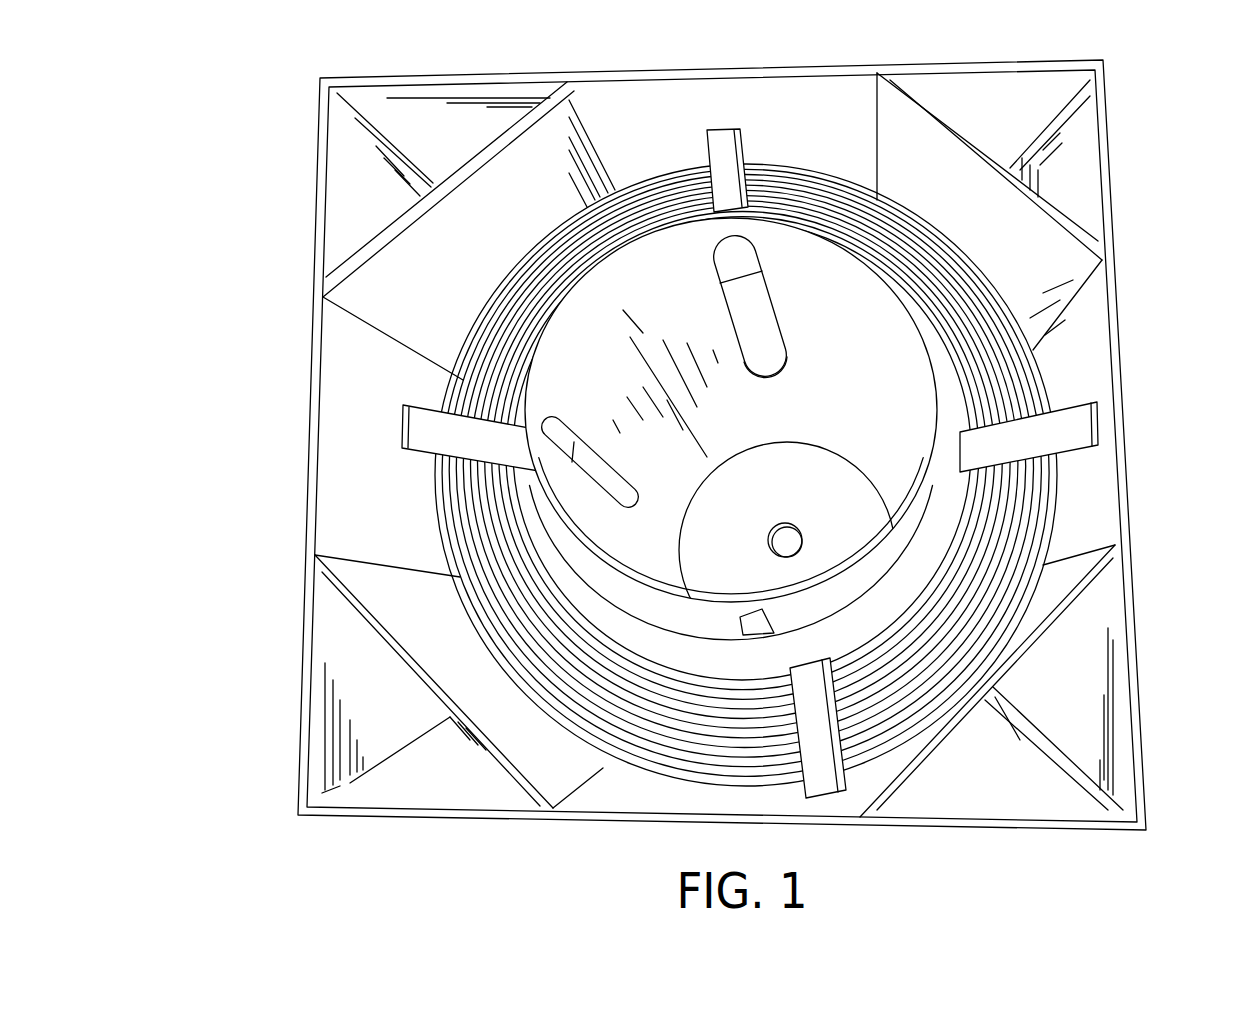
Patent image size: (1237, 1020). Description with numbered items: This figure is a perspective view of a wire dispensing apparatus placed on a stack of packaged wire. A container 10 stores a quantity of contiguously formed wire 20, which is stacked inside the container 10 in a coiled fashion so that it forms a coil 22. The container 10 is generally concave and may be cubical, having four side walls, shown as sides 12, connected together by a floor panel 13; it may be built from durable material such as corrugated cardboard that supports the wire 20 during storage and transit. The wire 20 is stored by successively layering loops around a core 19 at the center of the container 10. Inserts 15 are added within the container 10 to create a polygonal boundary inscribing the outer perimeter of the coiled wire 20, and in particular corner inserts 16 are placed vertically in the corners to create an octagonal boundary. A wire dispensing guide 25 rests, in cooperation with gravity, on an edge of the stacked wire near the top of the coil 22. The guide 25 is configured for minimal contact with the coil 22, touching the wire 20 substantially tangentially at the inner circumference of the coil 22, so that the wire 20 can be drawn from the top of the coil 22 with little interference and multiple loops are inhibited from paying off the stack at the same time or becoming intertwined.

The container 10 is at (1135, 195).
The sides 12 is at (340, 377).
The floor panel 13 is at (784, 496).
The inserts 15 is at (470, 212).
The corner inserts 16 is at (1087, 622).
The core 19 is at (805, 262).
The wire 20 is at (1052, 354).
The coil 22 is at (1070, 374).
The wire dispensing guide 25 is at (655, 628).